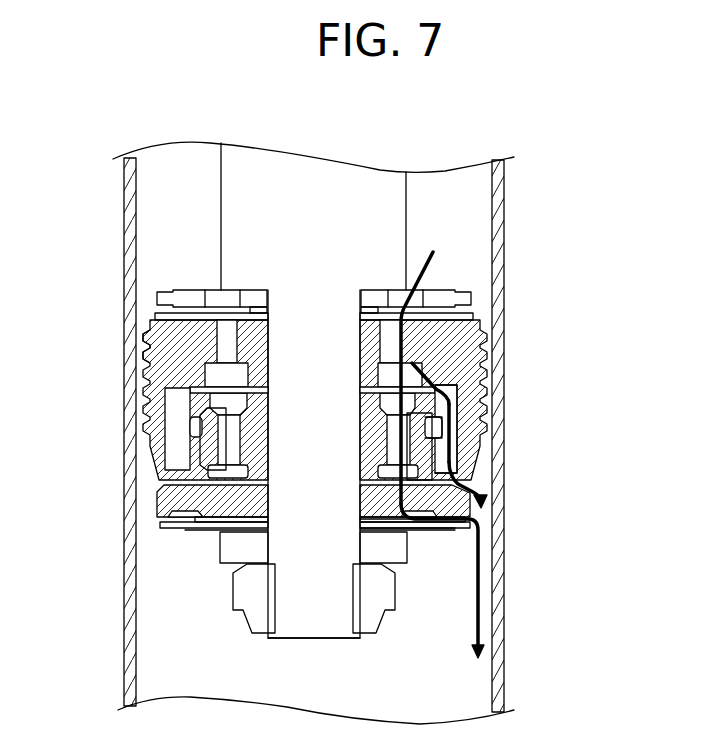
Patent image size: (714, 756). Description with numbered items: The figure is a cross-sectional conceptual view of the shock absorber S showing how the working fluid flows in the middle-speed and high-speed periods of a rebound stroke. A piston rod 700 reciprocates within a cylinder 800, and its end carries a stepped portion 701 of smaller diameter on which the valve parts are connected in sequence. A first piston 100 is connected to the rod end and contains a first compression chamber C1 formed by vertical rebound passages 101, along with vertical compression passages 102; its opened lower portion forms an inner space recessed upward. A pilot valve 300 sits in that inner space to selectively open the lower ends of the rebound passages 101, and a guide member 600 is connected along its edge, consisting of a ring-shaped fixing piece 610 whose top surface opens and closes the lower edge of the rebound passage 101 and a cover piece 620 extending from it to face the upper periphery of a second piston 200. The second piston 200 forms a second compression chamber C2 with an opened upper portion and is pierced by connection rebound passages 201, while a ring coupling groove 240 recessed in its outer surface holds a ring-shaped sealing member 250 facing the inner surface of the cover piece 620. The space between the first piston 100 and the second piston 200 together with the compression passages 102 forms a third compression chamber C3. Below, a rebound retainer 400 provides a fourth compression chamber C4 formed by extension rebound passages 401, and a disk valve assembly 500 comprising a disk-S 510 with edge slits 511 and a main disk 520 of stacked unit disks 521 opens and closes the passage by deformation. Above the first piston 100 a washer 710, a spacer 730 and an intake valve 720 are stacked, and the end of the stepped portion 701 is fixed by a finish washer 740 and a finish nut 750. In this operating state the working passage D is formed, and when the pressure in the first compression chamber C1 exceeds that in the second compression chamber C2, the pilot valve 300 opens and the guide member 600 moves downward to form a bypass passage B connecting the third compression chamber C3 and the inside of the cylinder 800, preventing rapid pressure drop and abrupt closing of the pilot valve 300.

The piston rod 700 is at (330, 212).
The stepped portion 701 is at (297, 632).
The washer 710 is at (190, 292).
The intake valve 720 is at (185, 316).
The spacer 730 is at (244, 309).
The finish washer 740 is at (400, 548).
The finish nut 750 is at (388, 600).
The cylinder 800 is at (490, 232).
The first piston 100 is at (200, 372).
The rebound passage 101 is at (222, 376).
The compression passage 102 is at (148, 335).
The second piston 200 is at (166, 488).
The connection rebound passage 201 is at (182, 514).
The ring coupling groove 240 is at (228, 452).
The ring-shaped sealing member 250 is at (215, 391).
The pilot valve 300 is at (216, 431).
The rebound retainer 400 is at (198, 524).
The extension rebound passage 401 is at (190, 531).
The disk valve assembly 500 is at (356, 510).
The disk-S 510 is at (456, 506).
The slit 511 is at (410, 533).
The main disk 520 is at (475, 492).
The unit disk 521 is at (432, 523).
The guide member 600 is at (245, 429).
The fixing piece 610 is at (178, 406).
The cover piece 620 is at (195, 427).
The first compression chamber C1 is at (180, 353).
The second compression chamber C2 is at (457, 441).
The third compression chamber C3 is at (455, 392).
The fourth compression chamber C4 is at (434, 472).
The shock absorber S is at (114, 203).
The bypass passage B is at (482, 511).
The working passage D is at (443, 593).